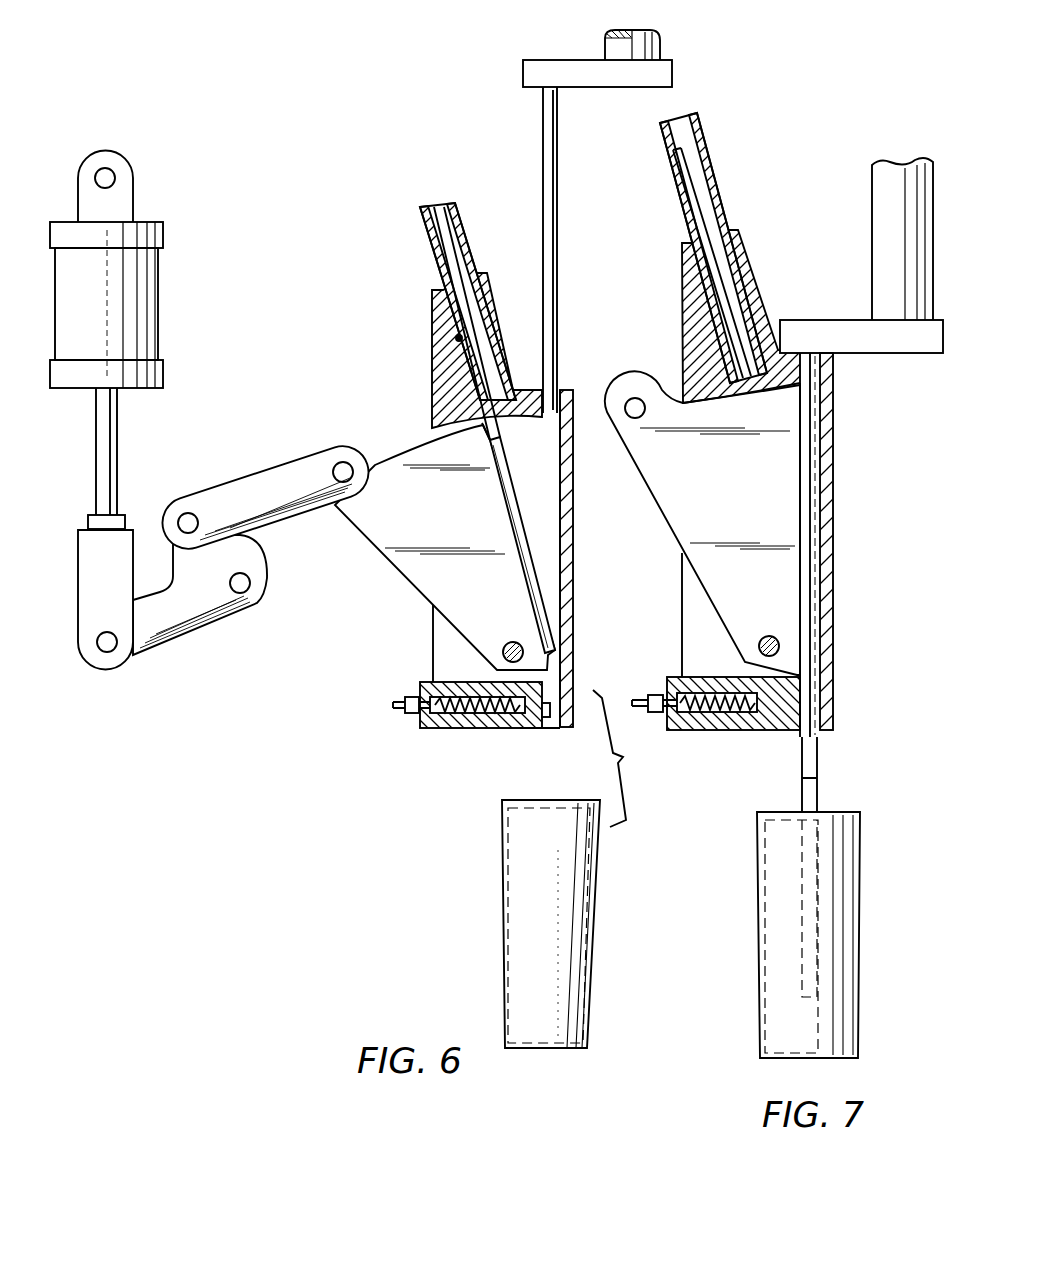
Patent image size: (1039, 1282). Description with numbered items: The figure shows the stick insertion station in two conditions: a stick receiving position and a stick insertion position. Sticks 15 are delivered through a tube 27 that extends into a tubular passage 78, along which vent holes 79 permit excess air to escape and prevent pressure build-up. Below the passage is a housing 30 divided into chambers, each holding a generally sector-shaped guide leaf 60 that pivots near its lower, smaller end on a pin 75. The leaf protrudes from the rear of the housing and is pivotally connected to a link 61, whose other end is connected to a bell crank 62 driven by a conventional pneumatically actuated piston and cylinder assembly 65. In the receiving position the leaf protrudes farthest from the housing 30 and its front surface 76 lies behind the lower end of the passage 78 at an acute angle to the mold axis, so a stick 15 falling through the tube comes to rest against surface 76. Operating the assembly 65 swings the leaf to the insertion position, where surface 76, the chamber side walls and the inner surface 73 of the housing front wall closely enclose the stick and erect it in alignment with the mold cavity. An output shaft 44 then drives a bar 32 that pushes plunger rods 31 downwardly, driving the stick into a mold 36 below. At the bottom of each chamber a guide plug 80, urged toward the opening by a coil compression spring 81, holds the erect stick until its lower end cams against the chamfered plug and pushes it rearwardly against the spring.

In FIG. 6, the stick 15 is at (514, 497).
In FIG. 7, the stick 15 is at (705, 198).
In FIG. 6, the tube 27 is at (432, 250).
In FIG. 7, the tube 27 is at (702, 114).
In FIG. 6, the housing 30 is at (573, 598).
In FIG. 7, the housing 30 is at (835, 572).
In FIG. 6, the plunger rods 31 is at (543, 145).
In FIG. 7, the plunger rods 31 is at (822, 503).
In FIG. 6, the bar 32 is at (523, 87).
In FIG. 7, the bar 32 is at (840, 318).
In FIG. 6, the molds 36 is at (503, 900).
In FIG. 6, the output shaft 44 is at (605, 50).
In FIG. 7, the output shaft 44 is at (872, 255).
In FIG. 6, the guide leaf 60 is at (419, 592).
In FIG. 7, the guide leaf 60 is at (702, 524).
In FIG. 6, the link 61 is at (241, 482).
In FIG. 6, the bell crank 62 is at (164, 645).
In FIG. 6, the piston and cylinder assembly 65 is at (160, 292).
In FIG. 6, the inner surface of the front wall 73 is at (555, 520).
In FIG. 6, the pin 75 is at (515, 642).
In FIG. 7, the pin 75 is at (773, 636).
In FIG. 6, the front surface 76 is at (488, 436).
In FIG. 7, the front surface 76 is at (805, 450).
In FIG. 6, the tubular passage 78 is at (456, 338).
In FIG. 6, the vent holes 79 is at (432, 375).
In FIG. 7, the vent holes 79 is at (682, 340).
In FIG. 6, the guide plug 80 is at (542, 728).
In FIG. 6, the coil compression spring 81 is at (468, 728).